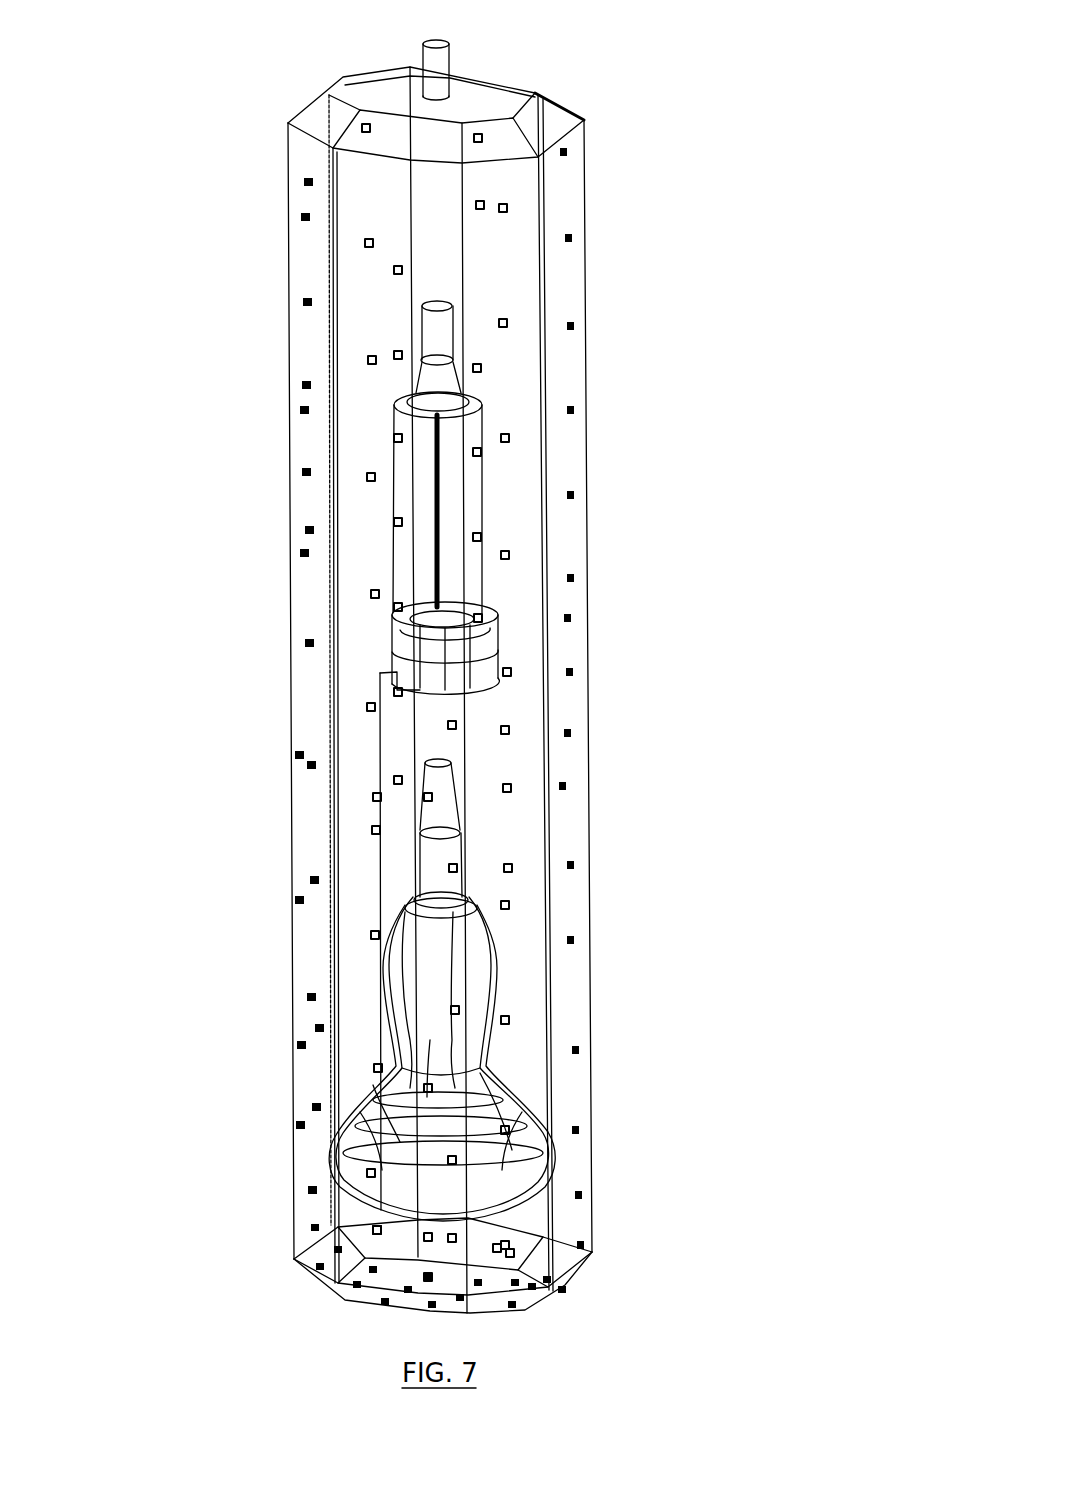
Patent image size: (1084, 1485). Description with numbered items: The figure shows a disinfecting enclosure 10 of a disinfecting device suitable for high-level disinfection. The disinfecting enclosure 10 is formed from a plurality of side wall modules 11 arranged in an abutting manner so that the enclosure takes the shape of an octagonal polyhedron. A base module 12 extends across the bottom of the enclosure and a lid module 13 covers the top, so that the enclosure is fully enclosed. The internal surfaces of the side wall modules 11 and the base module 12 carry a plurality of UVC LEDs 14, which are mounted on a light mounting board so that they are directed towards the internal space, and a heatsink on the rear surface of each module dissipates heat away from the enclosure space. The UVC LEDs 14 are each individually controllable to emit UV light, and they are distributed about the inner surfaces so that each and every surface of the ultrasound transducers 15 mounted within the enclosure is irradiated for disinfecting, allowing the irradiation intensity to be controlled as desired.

The disinfecting enclosure 10 is at (439, 663).
The side wall modules 11 is at (572, 202).
The base module 12 is at (517, 1287).
The lid module 13 is at (370, 98).
The UVC LEDs 14 is at (362, 488).
The ultrasound transducers 15 is at (452, 527).